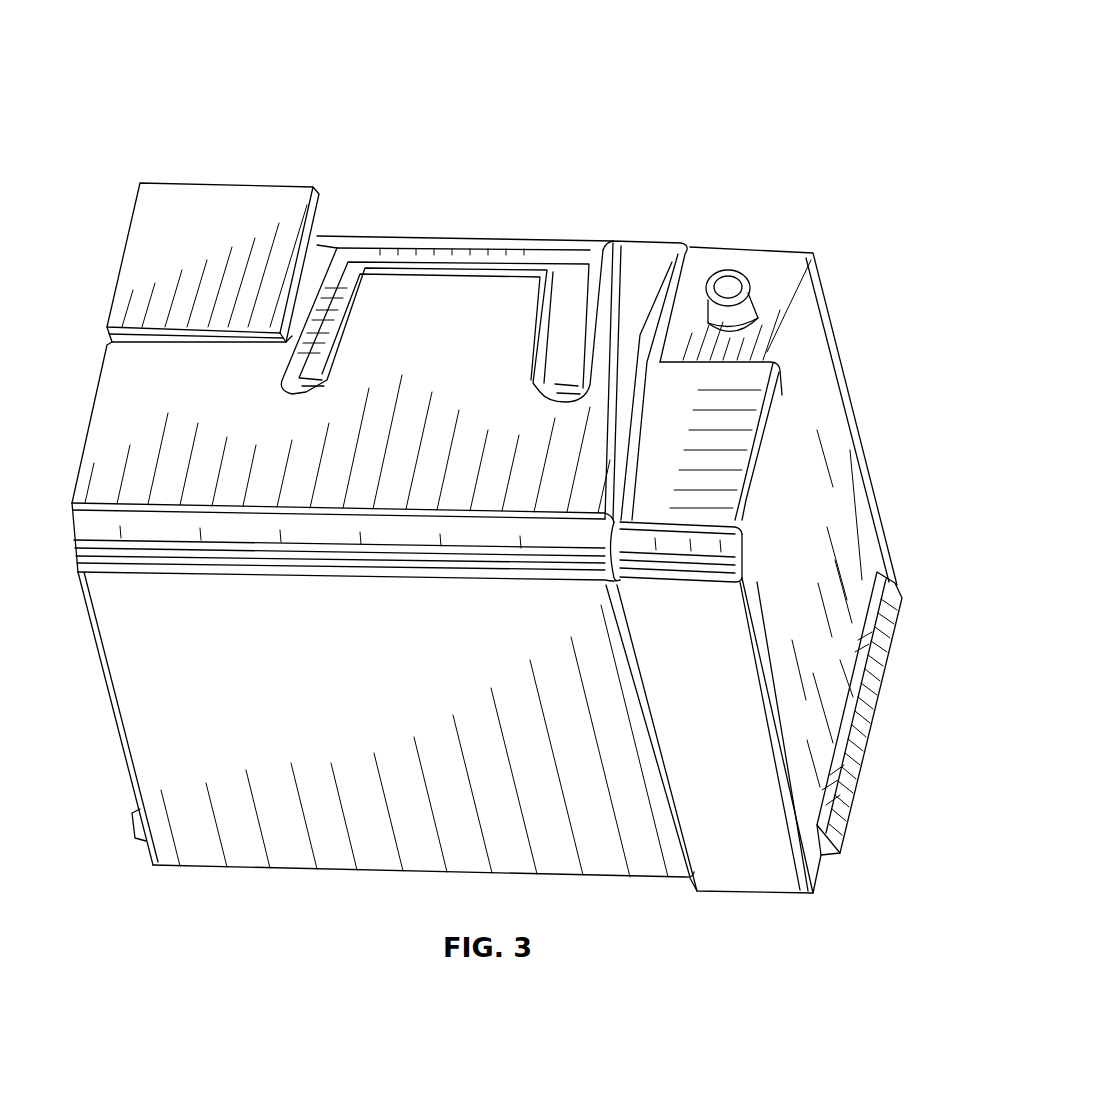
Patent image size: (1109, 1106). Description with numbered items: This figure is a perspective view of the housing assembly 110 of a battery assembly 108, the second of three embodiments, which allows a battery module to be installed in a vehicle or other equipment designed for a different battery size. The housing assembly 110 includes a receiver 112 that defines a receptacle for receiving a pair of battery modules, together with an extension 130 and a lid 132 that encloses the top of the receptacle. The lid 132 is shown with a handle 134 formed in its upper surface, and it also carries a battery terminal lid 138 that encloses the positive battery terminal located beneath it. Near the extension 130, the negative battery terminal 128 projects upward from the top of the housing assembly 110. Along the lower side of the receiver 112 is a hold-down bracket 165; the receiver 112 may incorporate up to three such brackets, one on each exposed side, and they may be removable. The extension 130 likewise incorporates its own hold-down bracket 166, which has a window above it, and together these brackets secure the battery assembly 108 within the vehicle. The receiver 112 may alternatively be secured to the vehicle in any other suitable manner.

The battery assembly 108 is at (712, 163).
The housing assembly 110 is at (603, 241).
The receiver 112 is at (142, 748).
The negative battery terminal 128 is at (750, 300).
The extension 130 is at (836, 412).
The lid 132 is at (120, 382).
The handle 134 is at (450, 249).
The battery terminal lid 138 is at (170, 258).
The hold-down bracket 165 is at (133, 830).
The hold-down bracket 166 is at (874, 690).